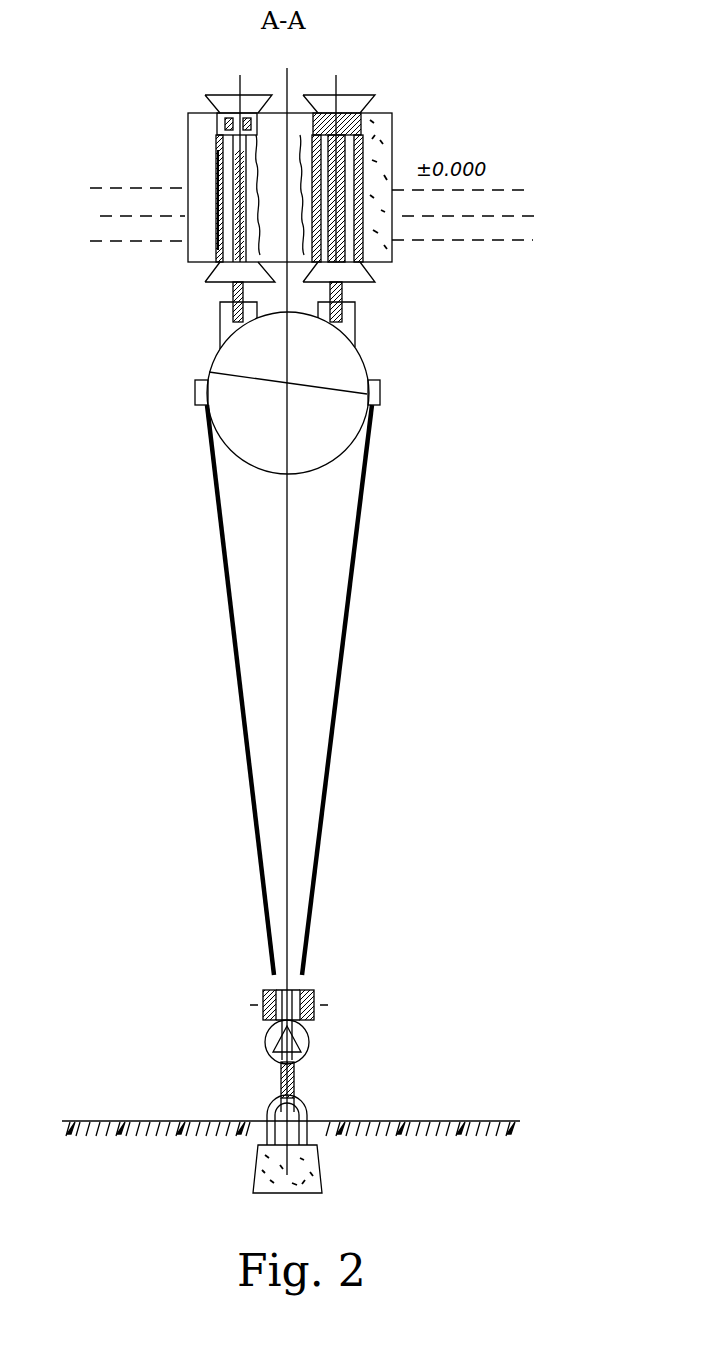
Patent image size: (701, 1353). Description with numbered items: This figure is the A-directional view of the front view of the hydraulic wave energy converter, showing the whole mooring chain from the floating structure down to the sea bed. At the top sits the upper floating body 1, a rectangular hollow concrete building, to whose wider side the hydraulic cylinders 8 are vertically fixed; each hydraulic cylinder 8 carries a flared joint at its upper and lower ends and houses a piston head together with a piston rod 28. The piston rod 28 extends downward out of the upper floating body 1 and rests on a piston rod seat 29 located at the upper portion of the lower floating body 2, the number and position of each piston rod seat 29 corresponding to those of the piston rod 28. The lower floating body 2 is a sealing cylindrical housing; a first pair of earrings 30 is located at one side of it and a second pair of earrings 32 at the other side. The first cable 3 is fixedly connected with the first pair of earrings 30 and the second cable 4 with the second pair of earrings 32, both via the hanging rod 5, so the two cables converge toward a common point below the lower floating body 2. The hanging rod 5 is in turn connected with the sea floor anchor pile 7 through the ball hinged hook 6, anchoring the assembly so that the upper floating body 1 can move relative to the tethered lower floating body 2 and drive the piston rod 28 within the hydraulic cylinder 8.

The upper floating body 1 is at (188, 160).
The hydraulic cylinder 8 is at (215, 212).
The piston rod 28 is at (208, 290).
The piston rod seat 29 is at (222, 322).
The lower floating body 2 is at (212, 353).
The first pair of earrings 30 is at (210, 373).
The second pair of earrings 32 is at (200, 400).
The first cable 3 is at (340, 633).
The second cable 4 is at (250, 770).
The hanging rod 5 is at (278, 994).
The ball hinged hook 6 is at (270, 1038).
The sea floor anchor pile 7 is at (265, 1146).